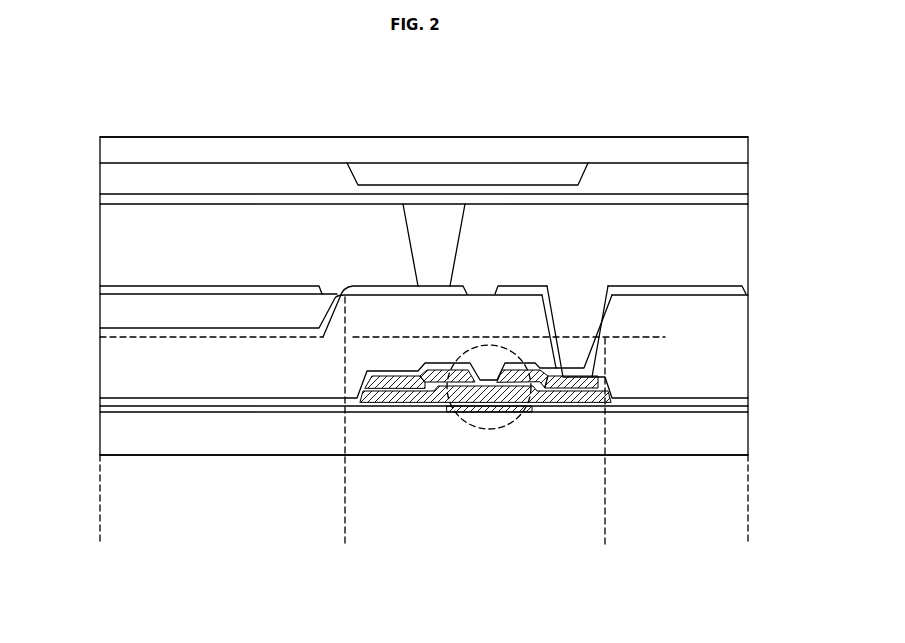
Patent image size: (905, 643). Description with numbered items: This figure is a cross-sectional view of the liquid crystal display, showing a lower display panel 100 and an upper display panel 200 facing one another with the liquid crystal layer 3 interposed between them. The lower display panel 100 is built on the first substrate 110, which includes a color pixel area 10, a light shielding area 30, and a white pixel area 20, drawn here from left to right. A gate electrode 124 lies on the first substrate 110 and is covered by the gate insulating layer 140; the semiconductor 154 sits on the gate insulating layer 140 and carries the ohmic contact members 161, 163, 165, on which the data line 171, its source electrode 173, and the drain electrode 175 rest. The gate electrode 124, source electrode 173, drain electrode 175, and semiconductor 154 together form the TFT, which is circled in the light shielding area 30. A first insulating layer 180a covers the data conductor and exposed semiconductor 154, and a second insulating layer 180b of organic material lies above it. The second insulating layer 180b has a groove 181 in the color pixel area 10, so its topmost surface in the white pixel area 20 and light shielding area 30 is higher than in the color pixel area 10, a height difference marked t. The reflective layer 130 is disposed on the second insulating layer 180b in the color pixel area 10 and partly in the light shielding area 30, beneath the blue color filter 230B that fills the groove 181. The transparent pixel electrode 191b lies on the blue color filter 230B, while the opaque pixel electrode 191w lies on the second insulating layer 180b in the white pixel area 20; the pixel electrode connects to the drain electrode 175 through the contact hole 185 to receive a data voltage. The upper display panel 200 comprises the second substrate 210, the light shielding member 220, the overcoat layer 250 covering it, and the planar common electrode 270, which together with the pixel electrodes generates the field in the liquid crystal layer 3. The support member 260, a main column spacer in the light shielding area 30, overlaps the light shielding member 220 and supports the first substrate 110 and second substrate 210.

The upper display panel 200 is at (758, 137).
The second substrate 210 is at (229, 151).
The light shielding member 220 is at (466, 176).
The overcoat layer 250 is at (629, 177).
The common electrode 270 is at (116, 201).
The liquid crystal layer 3 is at (758, 204).
The support member 260 is at (450, 224).
The lower display panel 100 is at (758, 286).
The first substrate 110 is at (657, 434).
The gate electrode 124 is at (488, 412).
The gate insulating layer 140 is at (685, 414).
The semiconductor 154 is at (558, 402).
The ohmic contact member 161 is at (403, 403).
The ohmic contact member 163 is at (467, 383).
The ohmic contact member 165 is at (582, 392).
The data line 171 is at (390, 384).
The source electrode 173 is at (450, 383).
The drain electrode 175 is at (522, 383).
The first insulating layer 180a is at (713, 403).
The second insulating layer 180b is at (116, 366).
The groove 181 is at (327, 320).
The contact hole 185 is at (603, 318).
The transparent pixel electrode 191b is at (116, 284).
The opaque pixel electrode 191w is at (694, 284).
The blue color filter 230B is at (118, 297).
The reflective layer 130 is at (116, 328).
The thin film transistor TFT is at (500, 346).
The thickness t is at (663, 302).
The color pixel area 10 is at (345, 536).
The light shielding area 30 is at (605, 536).
The white pixel area 20 is at (748, 536).